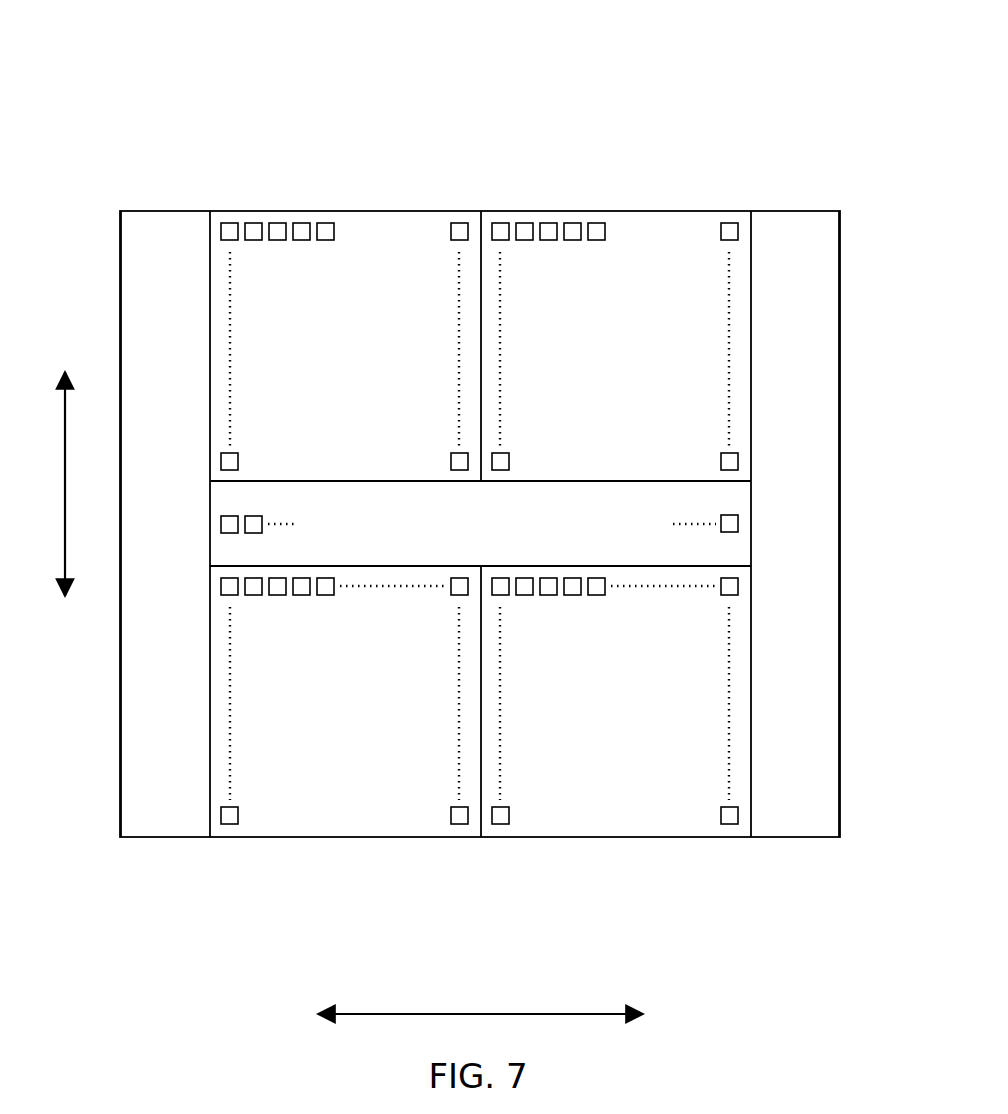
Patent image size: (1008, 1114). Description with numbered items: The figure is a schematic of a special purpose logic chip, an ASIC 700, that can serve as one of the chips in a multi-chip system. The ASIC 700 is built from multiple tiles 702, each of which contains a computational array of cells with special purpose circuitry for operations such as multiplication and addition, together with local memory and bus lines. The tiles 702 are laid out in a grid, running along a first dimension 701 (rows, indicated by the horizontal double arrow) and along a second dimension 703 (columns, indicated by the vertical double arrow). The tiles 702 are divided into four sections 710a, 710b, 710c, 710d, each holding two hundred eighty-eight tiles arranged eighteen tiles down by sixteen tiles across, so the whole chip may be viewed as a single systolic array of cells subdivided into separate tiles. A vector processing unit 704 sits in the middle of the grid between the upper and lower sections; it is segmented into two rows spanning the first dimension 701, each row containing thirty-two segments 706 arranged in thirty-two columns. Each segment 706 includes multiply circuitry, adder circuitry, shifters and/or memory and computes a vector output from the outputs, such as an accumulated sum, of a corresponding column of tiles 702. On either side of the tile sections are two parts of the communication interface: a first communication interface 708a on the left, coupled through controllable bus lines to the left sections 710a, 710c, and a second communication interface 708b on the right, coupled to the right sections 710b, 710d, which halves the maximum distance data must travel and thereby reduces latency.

The ASIC 700 is at (147, 36).
The first dimension 701 is at (480, 1012).
The tile 702 is at (230, 221).
The second dimension 703 is at (65, 484).
The vector processing unit 704 is at (722, 494).
The segment 706 is at (738, 522).
The first communication interface 708a is at (155, 222).
The second communication interface 708b is at (797, 222).
The tile section 710a is at (352, 174).
The tile section 710b is at (628, 174).
The tile section 710c is at (334, 842).
The tile section 710d is at (631, 842).